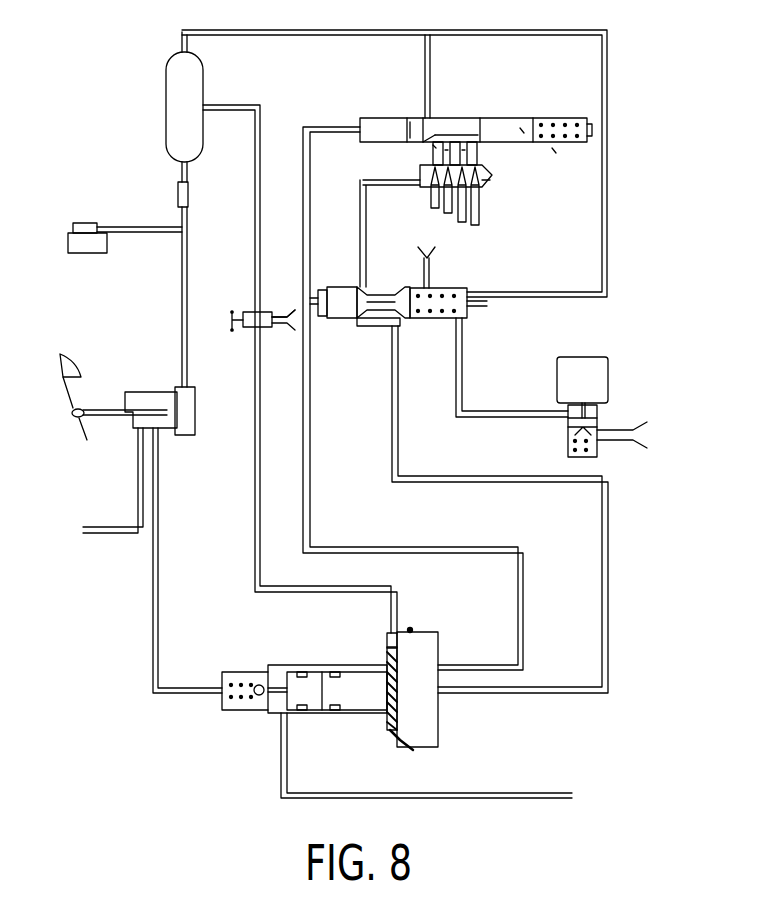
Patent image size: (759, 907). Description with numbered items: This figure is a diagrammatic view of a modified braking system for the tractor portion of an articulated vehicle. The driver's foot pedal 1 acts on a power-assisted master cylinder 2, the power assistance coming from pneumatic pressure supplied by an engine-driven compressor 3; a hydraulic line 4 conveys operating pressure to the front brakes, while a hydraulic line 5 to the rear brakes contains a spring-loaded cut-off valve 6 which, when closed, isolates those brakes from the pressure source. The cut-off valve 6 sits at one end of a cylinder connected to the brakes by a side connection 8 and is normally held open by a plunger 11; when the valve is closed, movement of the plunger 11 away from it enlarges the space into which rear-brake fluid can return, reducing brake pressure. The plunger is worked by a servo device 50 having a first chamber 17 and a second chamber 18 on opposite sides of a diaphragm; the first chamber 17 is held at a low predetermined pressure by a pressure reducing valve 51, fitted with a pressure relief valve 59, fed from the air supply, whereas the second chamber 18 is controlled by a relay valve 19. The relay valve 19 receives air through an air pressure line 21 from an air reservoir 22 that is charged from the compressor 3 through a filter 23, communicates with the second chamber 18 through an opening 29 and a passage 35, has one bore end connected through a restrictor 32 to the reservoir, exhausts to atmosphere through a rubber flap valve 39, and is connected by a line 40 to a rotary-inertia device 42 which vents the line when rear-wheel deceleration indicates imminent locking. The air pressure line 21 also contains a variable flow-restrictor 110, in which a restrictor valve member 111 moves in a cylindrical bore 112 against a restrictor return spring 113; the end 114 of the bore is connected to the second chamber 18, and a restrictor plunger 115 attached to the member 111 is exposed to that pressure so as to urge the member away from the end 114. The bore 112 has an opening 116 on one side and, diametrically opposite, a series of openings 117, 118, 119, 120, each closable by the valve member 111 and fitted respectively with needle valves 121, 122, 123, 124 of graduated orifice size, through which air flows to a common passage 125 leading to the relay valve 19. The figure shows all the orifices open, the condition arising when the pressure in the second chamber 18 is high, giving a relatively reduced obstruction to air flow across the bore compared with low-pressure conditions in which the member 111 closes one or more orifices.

The foot pedal 1 is at (72, 402).
The master cylinder 2 is at (187, 401).
The compressor 3 is at (107, 243).
The hydraulic line 4 is at (105, 530).
The hydraulic line 5 is at (159, 500).
The cut-off valve 6 is at (258, 684).
The side connection 8 is at (323, 793).
The plunger 11 is at (313, 683).
The first chamber 17 is at (390, 640).
The second chamber 18 is at (430, 645).
The relay valve 19 is at (366, 328).
The air pressure line 21 is at (427, 53).
The air reservoir 22 is at (203, 88).
The filter 23 is at (188, 195).
The opening 29 is at (392, 465).
The restrictor 32 is at (487, 303).
The passage 35 is at (310, 428).
The flap valve 39 is at (423, 258).
The line 40 is at (462, 380).
The device 42 is at (600, 377).
The servo device 50 is at (431, 627).
The pressure reducing valve 51 is at (252, 310).
The pressure relief valve 59 is at (277, 327).
The variable flow-restrictor 110 is at (555, 152).
The restrictor valve member 111 is at (523, 130).
The cylindrical bore 112 is at (457, 118).
The restrictor return spring 113 is at (553, 117).
The end of the bore 114 is at (367, 118).
The restrictor plunger 115 is at (407, 128).
The opening 116 is at (453, 118).
The opening 117 is at (428, 175).
The opening 118 is at (433, 145).
The opening 119 is at (463, 135).
The opening 120 is at (480, 153).
The needle valve 121 is at (442, 207).
The needle valve 122 is at (480, 193).
The needle valve 123 is at (483, 217).
The needle valve 124 is at (487, 187).
The common passage 125 is at (420, 190).